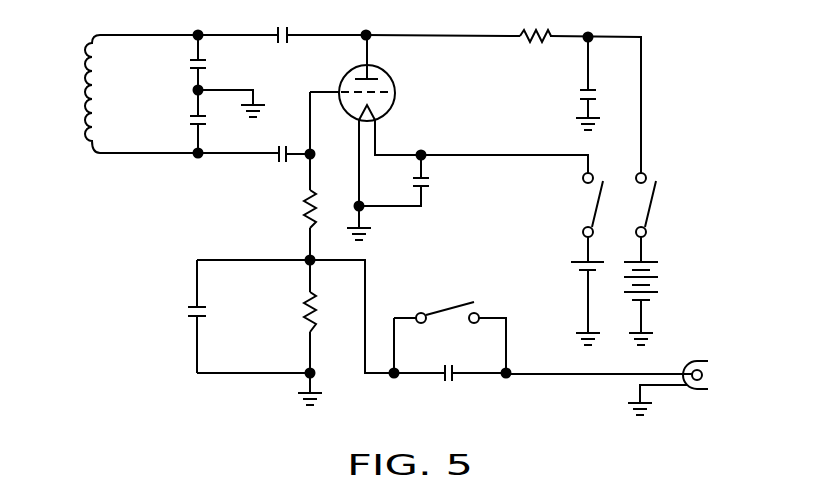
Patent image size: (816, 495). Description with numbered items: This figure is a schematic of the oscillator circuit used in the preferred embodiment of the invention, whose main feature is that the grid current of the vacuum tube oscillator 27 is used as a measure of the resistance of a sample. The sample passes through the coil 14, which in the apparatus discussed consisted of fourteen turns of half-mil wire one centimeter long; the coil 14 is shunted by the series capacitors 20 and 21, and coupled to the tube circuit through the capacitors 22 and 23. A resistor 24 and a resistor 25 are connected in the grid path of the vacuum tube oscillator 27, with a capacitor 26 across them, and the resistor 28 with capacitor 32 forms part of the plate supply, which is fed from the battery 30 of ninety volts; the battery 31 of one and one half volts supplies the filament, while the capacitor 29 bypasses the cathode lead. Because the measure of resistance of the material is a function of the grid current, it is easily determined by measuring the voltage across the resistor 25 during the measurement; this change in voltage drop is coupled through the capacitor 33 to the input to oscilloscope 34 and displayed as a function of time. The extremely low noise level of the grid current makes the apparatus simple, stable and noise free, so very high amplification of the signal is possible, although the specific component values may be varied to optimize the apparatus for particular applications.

The coil 14 is at (85, 112).
The capacitor 20 is at (189, 63).
The capacitor 21 is at (186, 117).
The capacitor 22 is at (277, 28).
The capacitor 23 is at (273, 157).
The resistor 24 is at (302, 207).
The resistor 25 is at (302, 313).
The capacitor 26 is at (188, 319).
The vacuum tube oscillator 27 is at (386, 85).
The resistor 28 is at (540, 34).
The capacitor 29 is at (431, 181).
The battery 30 is at (658, 268).
The battery 31 is at (567, 264).
The capacitor 32 is at (578, 93).
The capacitor 33 is at (452, 385).
The input to oscilloscope 34 is at (717, 367).